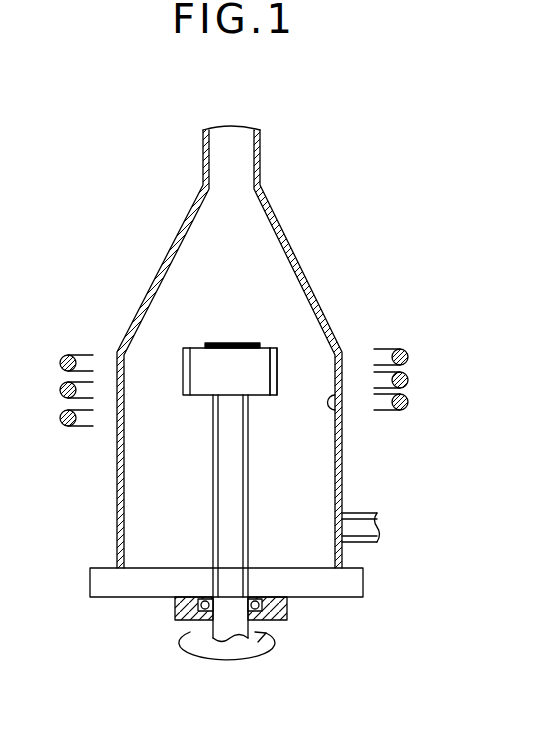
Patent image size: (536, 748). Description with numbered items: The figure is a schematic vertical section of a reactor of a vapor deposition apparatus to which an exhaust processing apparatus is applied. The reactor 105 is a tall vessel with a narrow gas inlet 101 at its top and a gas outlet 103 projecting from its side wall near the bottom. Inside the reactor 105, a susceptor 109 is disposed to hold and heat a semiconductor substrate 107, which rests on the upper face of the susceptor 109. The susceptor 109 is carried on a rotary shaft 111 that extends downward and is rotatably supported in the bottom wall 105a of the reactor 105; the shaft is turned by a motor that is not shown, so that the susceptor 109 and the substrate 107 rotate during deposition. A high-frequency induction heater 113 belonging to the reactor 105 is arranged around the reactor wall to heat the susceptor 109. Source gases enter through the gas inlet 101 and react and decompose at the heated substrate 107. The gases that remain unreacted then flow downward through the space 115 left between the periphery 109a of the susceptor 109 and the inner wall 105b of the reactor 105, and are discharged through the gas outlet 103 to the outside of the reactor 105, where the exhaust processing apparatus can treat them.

The gas inlet 101 is at (245, 170).
The gas outlet 103 is at (365, 513).
The reactor 105 is at (343, 457).
The bottom wall 105a is at (313, 588).
The inner wall 105b is at (340, 418).
The semiconductor substrate 107 is at (258, 345).
The susceptor 109 is at (190, 378).
The periphery 109a is at (277, 385).
The rotary shaft 111 is at (243, 532).
The high-frequency induction heater 113 is at (409, 357).
The space 115 is at (130, 368).